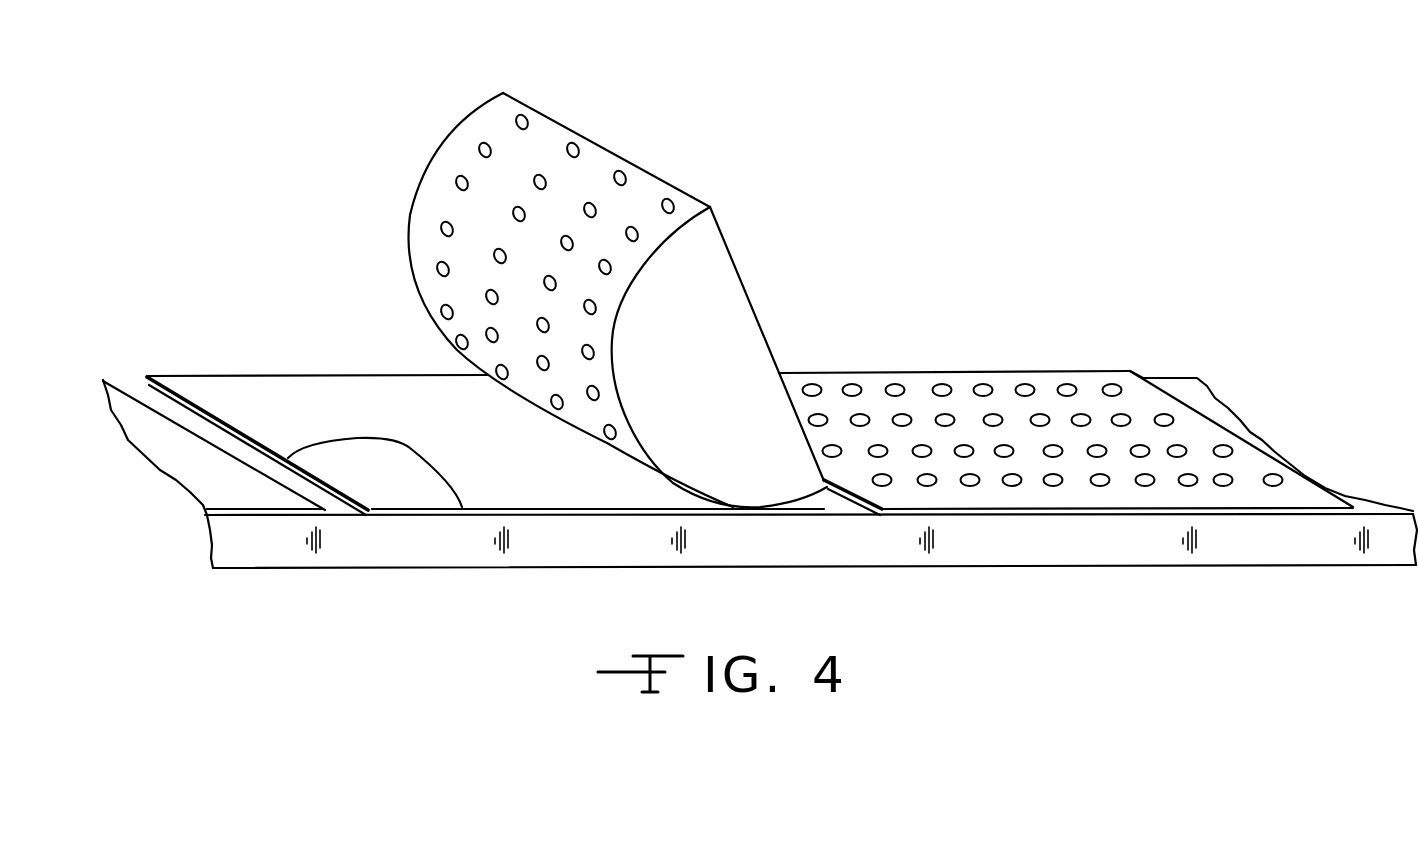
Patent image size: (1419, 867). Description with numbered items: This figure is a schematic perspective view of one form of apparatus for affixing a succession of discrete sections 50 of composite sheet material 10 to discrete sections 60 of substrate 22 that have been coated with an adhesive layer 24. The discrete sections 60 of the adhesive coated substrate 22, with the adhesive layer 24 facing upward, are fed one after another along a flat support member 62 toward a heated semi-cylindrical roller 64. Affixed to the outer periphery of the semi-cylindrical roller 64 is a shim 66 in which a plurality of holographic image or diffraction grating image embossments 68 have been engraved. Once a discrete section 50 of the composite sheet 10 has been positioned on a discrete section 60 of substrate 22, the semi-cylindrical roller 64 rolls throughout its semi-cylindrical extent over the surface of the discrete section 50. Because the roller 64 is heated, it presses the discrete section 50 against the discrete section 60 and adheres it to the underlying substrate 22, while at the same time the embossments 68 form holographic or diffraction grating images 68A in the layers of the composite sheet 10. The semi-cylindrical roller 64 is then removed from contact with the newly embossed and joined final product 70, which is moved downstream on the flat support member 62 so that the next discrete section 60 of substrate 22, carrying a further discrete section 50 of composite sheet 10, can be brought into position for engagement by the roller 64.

The composite sheet material 10 is at (200, 476).
The substrate 22 is at (440, 513).
The adhesive layer 24 is at (403, 486).
The discrete section of composite sheet 50 is at (132, 420).
The discrete section of substrate 60 is at (240, 510).
The flat support member 62 is at (968, 543).
The heated semi-cylindrical roller 64 is at (720, 295).
The shim 66 is at (693, 223).
The holographic image or diffraction grating image embossments 68 is at (573, 145).
The holographic or diffraction grating images 68A is at (1042, 413).
The final product 70 is at (1211, 420).